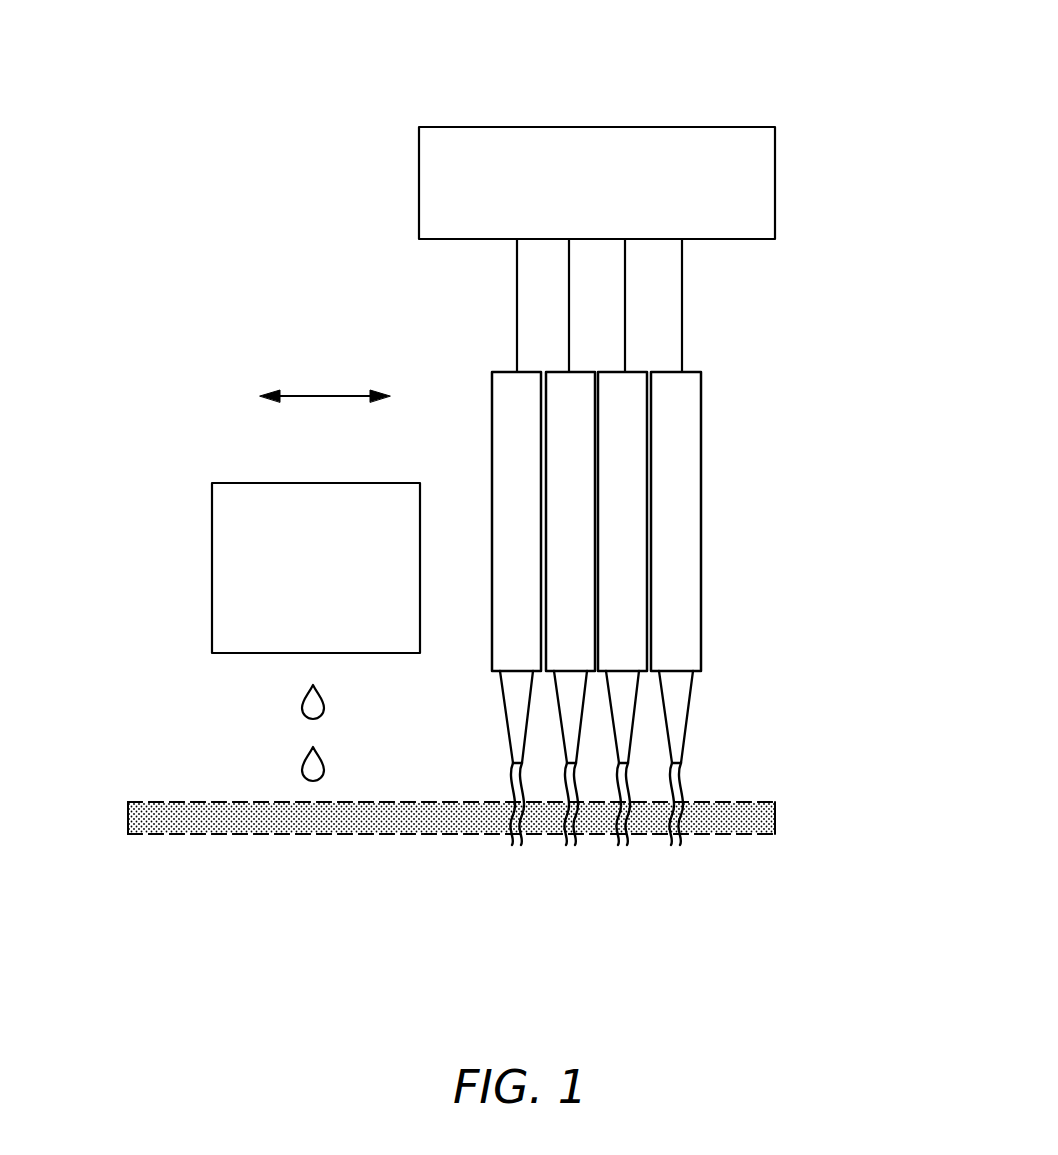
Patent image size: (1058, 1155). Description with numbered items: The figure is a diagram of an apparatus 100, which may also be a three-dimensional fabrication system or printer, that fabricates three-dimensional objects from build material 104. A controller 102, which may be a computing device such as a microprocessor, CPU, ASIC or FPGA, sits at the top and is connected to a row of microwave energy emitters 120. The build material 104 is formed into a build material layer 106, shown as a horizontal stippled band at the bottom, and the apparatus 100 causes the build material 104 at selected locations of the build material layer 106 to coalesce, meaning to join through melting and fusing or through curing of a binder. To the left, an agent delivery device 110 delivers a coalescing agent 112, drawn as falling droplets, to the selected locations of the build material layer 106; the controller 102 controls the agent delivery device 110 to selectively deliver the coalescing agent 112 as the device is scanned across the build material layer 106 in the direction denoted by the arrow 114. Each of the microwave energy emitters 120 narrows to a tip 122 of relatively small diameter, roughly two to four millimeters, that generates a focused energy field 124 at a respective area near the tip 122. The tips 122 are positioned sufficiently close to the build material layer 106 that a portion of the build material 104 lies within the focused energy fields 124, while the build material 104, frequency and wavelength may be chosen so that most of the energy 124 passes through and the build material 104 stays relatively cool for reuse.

The apparatus 100 is at (437, 54).
The controller 102 is at (577, 210).
The build material 104 is at (336, 834).
The build material layer 106 is at (712, 835).
The agent delivery device 110 is at (297, 625).
The coalescing agent 112 is at (300, 768).
The arrow 114 is at (306, 393).
The microwave energy emitters 120 is at (701, 477).
The tip 122 is at (693, 698).
The focused energy field 124 is at (685, 780).